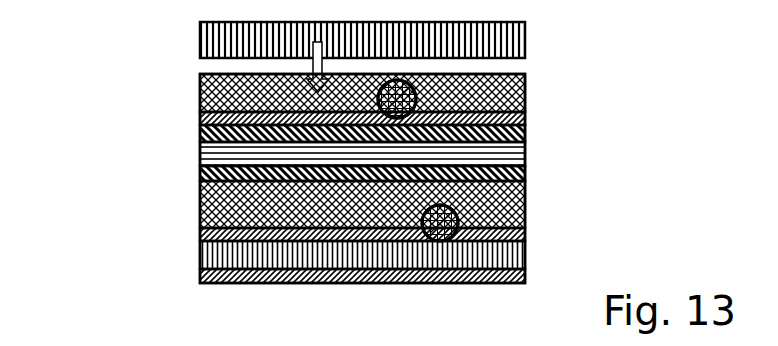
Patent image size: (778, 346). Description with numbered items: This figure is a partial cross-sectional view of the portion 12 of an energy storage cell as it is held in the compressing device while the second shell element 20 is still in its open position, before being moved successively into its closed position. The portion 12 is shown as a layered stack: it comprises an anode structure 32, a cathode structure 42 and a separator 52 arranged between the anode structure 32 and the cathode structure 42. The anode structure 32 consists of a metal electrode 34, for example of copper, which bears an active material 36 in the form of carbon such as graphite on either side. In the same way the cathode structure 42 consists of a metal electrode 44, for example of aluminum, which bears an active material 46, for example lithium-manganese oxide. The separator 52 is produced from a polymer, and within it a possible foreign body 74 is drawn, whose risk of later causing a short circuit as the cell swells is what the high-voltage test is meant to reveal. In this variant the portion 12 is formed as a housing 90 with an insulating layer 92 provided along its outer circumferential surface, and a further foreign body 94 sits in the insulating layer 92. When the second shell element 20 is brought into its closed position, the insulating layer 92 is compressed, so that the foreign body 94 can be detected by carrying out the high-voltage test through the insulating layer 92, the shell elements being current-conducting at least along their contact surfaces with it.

The portion of an energy storage cell 12 is at (377, 200).
The second shell element 20 is at (527, 45).
The anode structure 32 is at (319, 255).
The metal electrode 34 is at (200, 255).
The active material 36 is at (200, 234).
The cathode structure 42 is at (319, 151).
The metal electrode 44 is at (200, 157).
The active material 46 is at (200, 133).
The separator 52 is at (549, 180).
The foreign body 74 is at (447, 236).
The housing 90 is at (200, 118).
The insulating layer 92 is at (200, 92).
The foreign body 94 is at (398, 114).